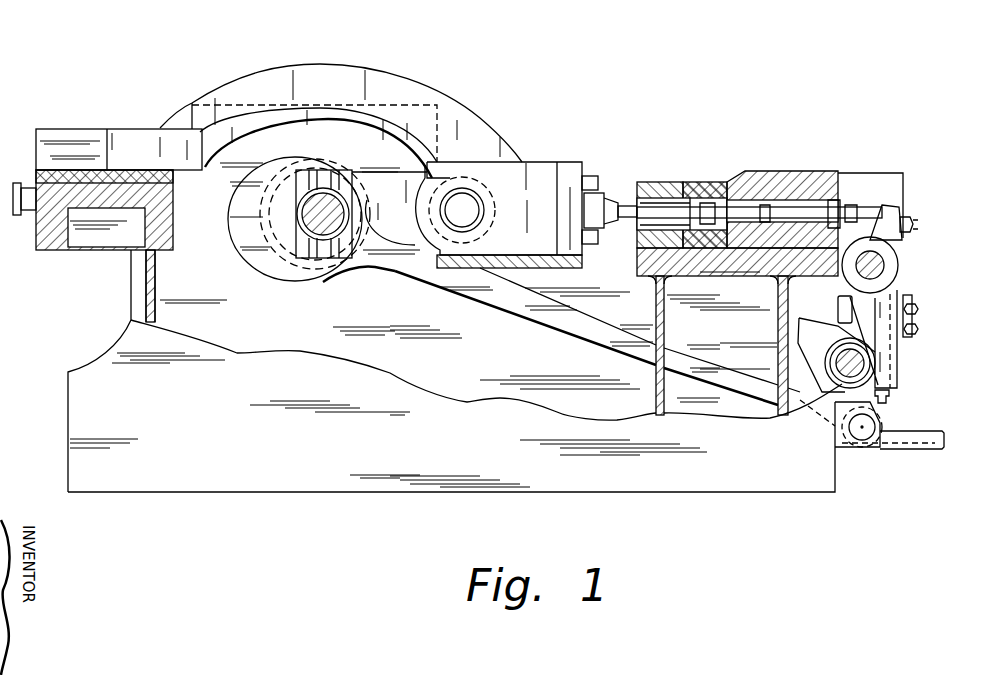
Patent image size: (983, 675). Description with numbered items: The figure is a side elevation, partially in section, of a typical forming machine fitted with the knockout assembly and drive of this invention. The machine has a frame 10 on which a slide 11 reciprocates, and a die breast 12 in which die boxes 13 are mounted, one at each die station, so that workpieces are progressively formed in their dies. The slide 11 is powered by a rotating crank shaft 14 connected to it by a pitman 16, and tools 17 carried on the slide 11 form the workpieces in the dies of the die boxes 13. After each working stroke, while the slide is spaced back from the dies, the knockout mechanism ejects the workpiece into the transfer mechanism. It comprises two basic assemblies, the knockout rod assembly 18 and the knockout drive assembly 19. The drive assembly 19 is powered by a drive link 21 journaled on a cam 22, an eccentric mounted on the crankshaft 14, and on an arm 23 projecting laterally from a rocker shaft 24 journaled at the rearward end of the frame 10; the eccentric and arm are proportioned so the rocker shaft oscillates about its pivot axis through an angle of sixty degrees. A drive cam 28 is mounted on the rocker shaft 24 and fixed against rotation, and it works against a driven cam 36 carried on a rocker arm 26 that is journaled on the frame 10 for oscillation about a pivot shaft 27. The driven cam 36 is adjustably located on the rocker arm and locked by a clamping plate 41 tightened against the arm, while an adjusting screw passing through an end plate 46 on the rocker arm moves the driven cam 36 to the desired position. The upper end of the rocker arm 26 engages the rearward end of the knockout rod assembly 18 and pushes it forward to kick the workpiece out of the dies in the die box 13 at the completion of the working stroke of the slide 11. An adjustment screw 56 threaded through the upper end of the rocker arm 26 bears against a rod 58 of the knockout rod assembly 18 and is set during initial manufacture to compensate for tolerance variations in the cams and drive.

The frame 10 is at (779, 158).
The slide 11 is at (550, 160).
The die breast 12 is at (660, 182).
The die box 13 is at (618, 230).
The crank shaft 14 is at (262, 266).
The pitman 16 is at (384, 184).
The tools 17 is at (626, 204).
The knockout rod assembly 18 is at (745, 272).
The knockout drive assembly 19 is at (912, 281).
The drive link 21 is at (506, 304).
The cam 22 is at (330, 280).
The arm 23 is at (882, 416).
The rocker shaft 24 is at (848, 364).
The rocker arm 26 is at (898, 242).
The pivot shaft 27 is at (888, 263).
The drive cam 28 is at (799, 332).
The driven cam 36 is at (838, 305).
The clamping plate 41 is at (918, 324).
The end plate 46 is at (893, 393).
The adjustment screw 56 is at (910, 220).
The rod 58 is at (866, 212).